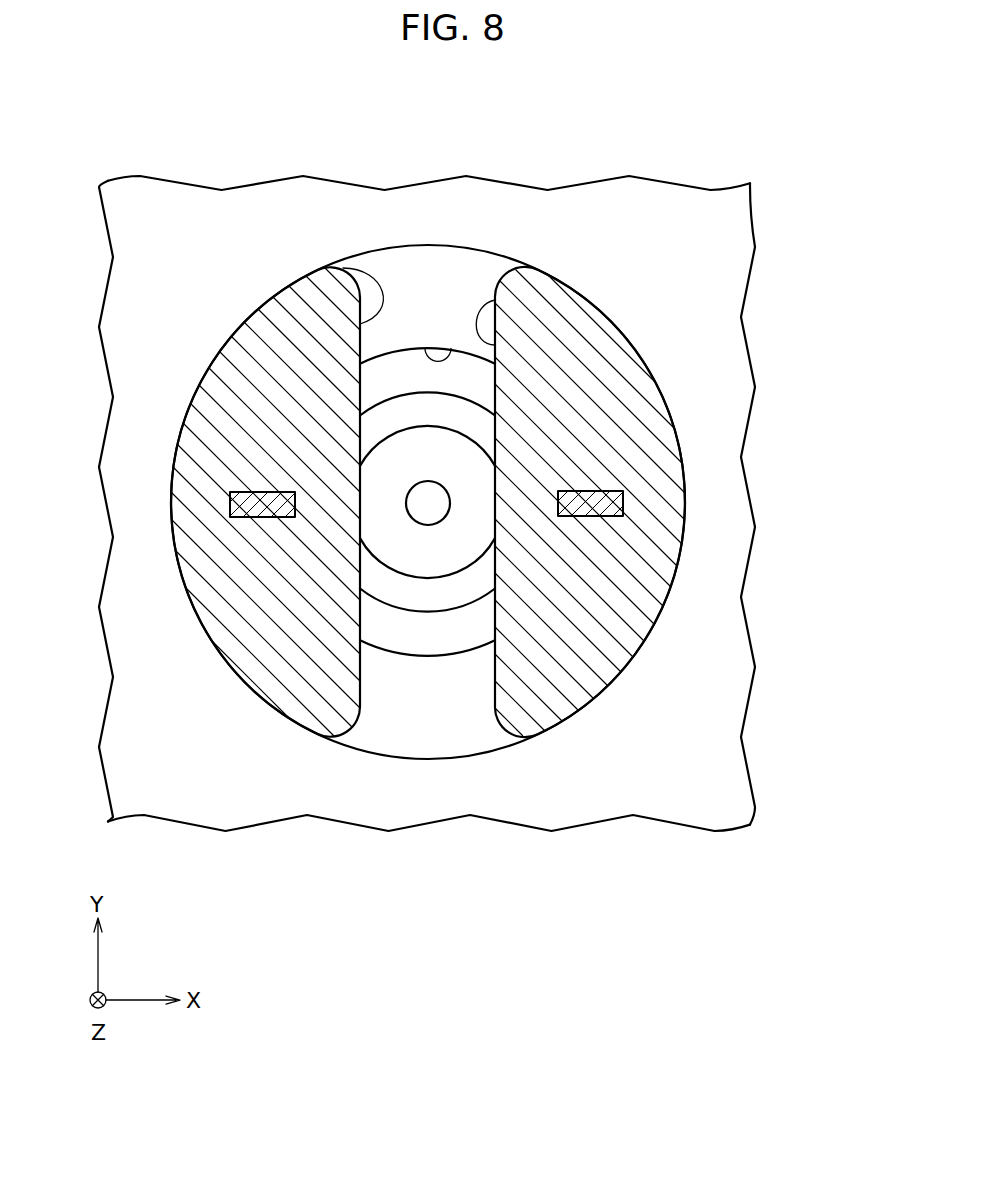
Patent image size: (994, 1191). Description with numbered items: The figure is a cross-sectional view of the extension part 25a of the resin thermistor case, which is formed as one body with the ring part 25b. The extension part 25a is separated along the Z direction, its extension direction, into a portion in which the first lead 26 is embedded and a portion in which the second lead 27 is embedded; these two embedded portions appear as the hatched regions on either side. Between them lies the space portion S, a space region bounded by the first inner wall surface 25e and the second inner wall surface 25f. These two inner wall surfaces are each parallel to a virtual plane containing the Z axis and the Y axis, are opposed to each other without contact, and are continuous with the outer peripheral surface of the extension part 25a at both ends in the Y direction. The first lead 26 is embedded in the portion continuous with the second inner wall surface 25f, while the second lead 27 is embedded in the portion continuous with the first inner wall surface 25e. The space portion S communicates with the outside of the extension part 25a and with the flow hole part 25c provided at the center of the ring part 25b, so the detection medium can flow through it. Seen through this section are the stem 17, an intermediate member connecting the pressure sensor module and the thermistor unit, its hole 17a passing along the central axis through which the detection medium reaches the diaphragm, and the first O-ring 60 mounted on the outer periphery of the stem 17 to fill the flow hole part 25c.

The ring part 25b is at (707, 310).
The extension part 25a is at (217, 436).
The flow hole part 25c is at (452, 345).
The first inner wall surface 25e is at (343, 268).
The second inner wall surface 25f is at (493, 307).
The first lead 26 is at (623, 495).
The second lead 27 is at (230, 496).
The stem 17 is at (395, 547).
The hole 17a is at (413, 521).
The first O-ring 60 is at (393, 627).
The space portion S is at (430, 695).